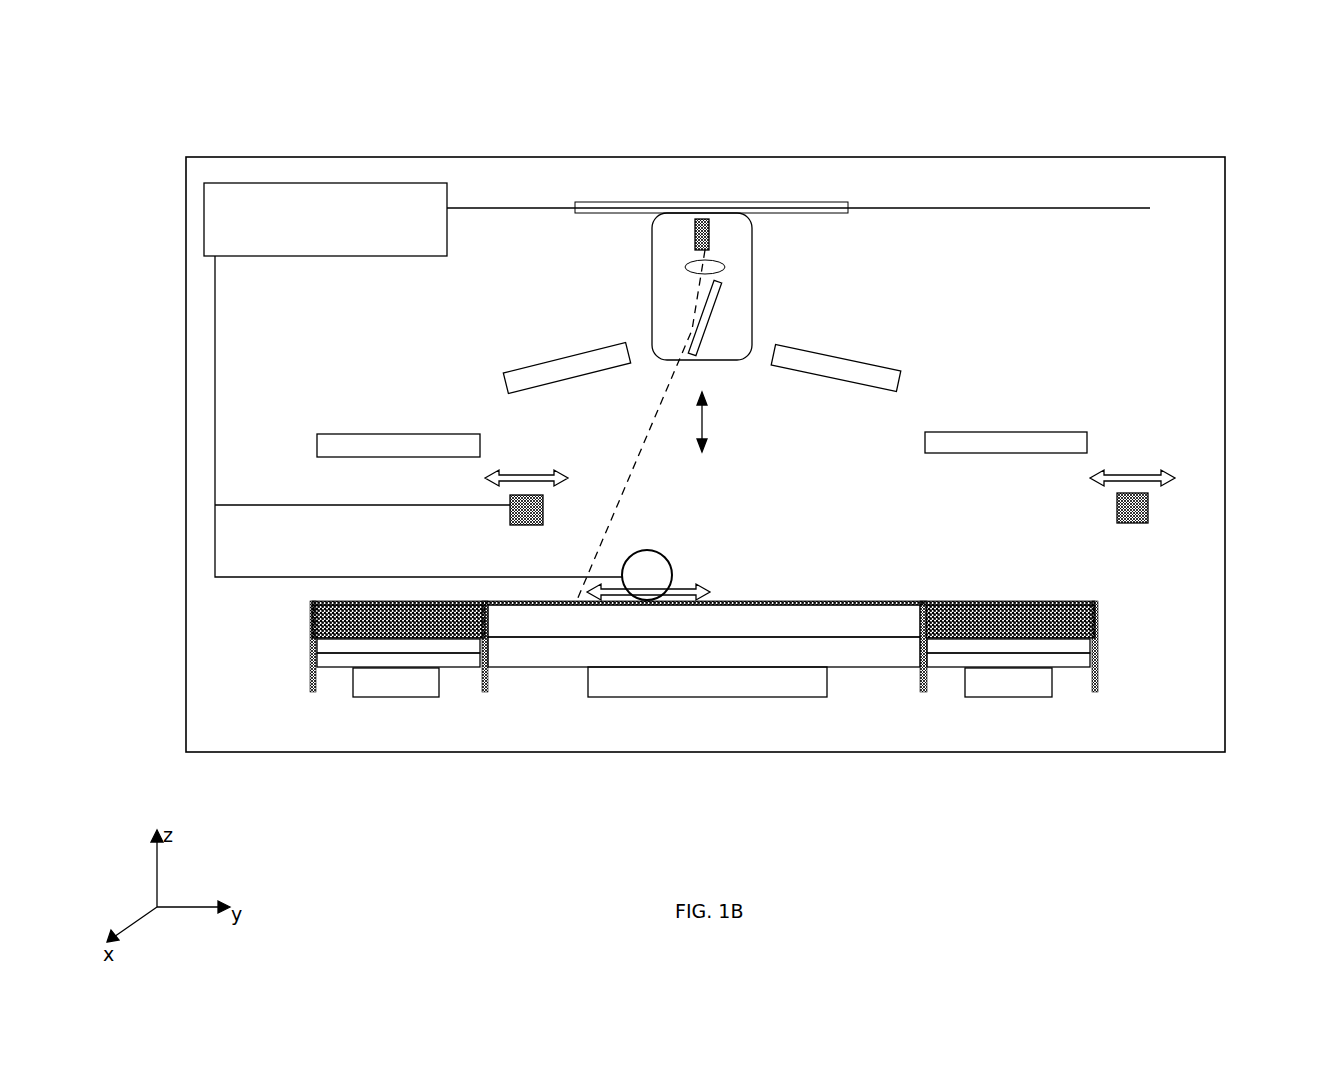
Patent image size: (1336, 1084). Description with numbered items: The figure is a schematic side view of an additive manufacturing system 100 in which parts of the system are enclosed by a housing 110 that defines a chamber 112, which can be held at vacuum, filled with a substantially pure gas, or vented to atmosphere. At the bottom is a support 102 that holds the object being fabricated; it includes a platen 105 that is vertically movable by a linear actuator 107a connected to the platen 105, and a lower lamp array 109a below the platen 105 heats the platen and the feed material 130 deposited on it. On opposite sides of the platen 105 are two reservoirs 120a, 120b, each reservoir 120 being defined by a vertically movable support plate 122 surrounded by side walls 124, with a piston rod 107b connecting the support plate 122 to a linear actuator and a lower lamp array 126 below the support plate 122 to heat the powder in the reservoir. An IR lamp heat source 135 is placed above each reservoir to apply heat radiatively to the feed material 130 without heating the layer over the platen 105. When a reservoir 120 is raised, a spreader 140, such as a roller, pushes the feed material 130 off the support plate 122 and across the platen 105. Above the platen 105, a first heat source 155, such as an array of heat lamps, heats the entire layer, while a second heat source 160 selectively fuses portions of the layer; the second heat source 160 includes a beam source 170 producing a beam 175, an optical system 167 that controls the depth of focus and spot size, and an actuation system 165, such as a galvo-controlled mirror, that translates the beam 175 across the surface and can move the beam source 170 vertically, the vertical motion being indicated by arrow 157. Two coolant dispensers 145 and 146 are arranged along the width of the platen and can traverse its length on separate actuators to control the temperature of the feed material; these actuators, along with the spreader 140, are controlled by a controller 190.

The additive manufacturing system 100 is at (1120, 128).
The housing 110 is at (1225, 443).
The controller 190 is at (677, 380).
The beam source 170 is at (702, 218).
The optical system 167 is at (688, 266).
The actuation system 165 is at (717, 295).
The second heat source 160 is at (730, 348).
The beam 175 is at (648, 445).
The vertical movement direction 157 is at (704, 424).
The first heat source 155 is at (584, 368).
The heat source 135 is at (702, 444).
The coolant dispenser 145 is at (518, 513).
The coolant dispenser 146 is at (1128, 513).
The spreader 140 is at (648, 550).
The chamber 112 is at (769, 579).
The reservoir 120a is at (440, 612).
The reservoir 120b is at (955, 612).
The reservoir 120 is at (1017, 518).
The feed material 130 is at (355, 617).
The side walls 124 is at (925, 678).
The support plate 122 is at (325, 645).
The lower lamp array 126 is at (1078, 661).
The platen 105 is at (704, 621).
The lower lamp array 109a is at (704, 652).
The linear actuator 107a is at (707, 682).
The piston rod 107b is at (702, 682).
The support 102 is at (497, 703).